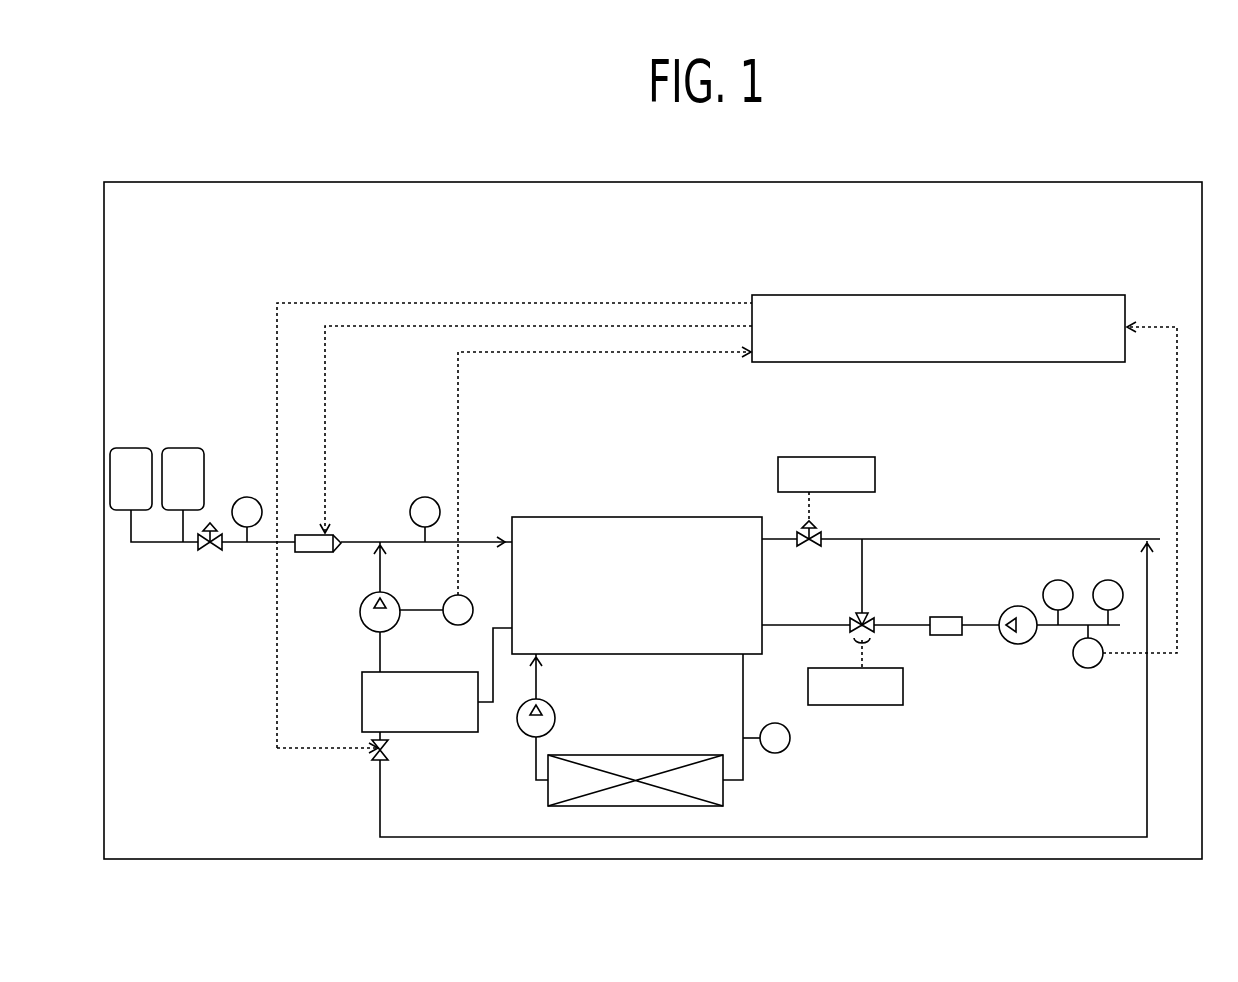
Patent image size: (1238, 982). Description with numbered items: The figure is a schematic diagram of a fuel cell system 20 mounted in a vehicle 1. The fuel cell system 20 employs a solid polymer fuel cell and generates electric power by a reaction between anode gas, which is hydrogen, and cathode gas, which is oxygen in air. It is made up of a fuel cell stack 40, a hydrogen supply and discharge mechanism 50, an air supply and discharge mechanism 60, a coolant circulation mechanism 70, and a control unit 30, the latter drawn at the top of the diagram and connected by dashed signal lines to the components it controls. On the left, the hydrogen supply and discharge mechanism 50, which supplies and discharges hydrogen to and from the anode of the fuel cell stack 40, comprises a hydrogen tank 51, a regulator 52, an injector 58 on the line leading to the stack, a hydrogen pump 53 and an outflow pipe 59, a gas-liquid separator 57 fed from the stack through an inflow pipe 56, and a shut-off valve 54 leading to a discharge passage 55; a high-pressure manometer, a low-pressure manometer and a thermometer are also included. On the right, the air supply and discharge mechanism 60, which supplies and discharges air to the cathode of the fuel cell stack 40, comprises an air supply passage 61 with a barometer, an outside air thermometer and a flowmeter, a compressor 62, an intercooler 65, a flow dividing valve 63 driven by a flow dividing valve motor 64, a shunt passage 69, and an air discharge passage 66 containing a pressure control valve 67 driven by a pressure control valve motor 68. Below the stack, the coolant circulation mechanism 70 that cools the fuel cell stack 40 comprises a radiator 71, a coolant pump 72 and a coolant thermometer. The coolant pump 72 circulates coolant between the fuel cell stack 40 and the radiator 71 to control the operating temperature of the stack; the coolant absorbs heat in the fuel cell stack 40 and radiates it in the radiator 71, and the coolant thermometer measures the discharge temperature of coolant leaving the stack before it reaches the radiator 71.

The vehicle 1 is at (880, 182).
The fuel cell system 20 is at (1148, 240).
The control unit 30 is at (1010, 295).
The fuel cell stack 40 is at (670, 496).
The hydrogen supply and discharge mechanism 50 is at (631, 619).
The hydrogen tank 51 is at (132, 448).
The regulator 52 is at (200, 550).
The hydrogen pump 53 is at (386, 596).
The shut-off valve 54 is at (388, 758).
The discharge passage 55 is at (450, 837).
The inflow pipe 56 is at (480, 718).
The gas-liquid separator 57 is at (362, 686).
The injector 58 is at (318, 535).
The outflow pipe 59 is at (378, 650).
The air supply and discharge mechanism 60 is at (961, 575).
The air supply passage 61 is at (1050, 630).
The compressor 62 is at (1005, 611).
The flow dividing valve 63 is at (872, 640).
The flow dividing valve motor 64 is at (903, 683).
The intercooler 65 is at (945, 617).
The air discharge passage 66 is at (1040, 539).
The pressure control valve 67 is at (820, 526).
The pressure control valve motor 68 is at (875, 475).
The shunt passage 69 is at (868, 560).
The coolant circulation mechanism 70 is at (681, 738).
The radiator 71 is at (725, 796).
The coolant pump 72 is at (556, 720).